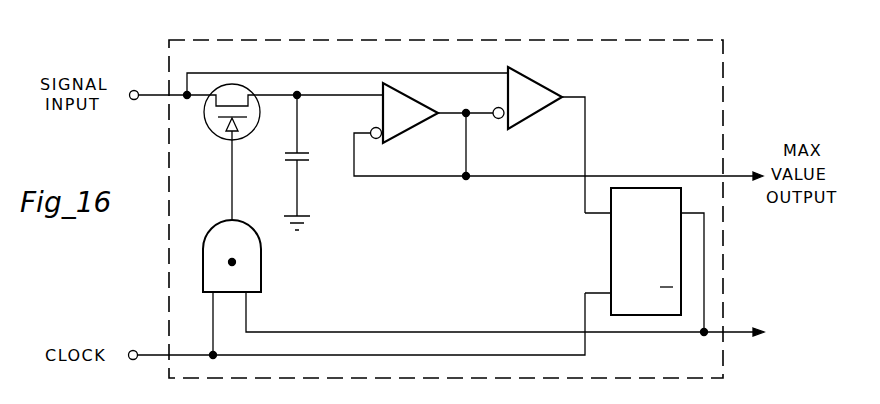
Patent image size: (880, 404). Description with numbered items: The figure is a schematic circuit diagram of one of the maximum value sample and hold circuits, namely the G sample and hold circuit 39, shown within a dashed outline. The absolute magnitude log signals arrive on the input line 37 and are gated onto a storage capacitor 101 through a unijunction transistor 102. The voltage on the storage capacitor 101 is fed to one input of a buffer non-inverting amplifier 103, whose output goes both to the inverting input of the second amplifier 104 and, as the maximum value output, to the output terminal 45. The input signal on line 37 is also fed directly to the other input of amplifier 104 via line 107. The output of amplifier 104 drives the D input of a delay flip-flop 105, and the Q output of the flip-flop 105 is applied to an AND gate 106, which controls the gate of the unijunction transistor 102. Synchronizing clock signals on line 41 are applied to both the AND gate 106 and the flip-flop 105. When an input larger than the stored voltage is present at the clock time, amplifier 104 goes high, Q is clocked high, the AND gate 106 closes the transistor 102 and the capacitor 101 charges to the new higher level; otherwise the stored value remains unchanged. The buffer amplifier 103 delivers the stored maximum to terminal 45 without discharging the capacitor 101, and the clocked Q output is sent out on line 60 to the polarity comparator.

The G sample and hold circuit 39 is at (333, 22).
The output line 37 is at (136, 91).
The line 107 is at (336, 73).
The unijunction transistor 102 is at (212, 136).
The storage capacitor 101 is at (301, 156).
The buffer non-inverting amplifier 103 is at (434, 103).
The amplifier 104 is at (540, 86).
The maximum value output terminal 45 is at (709, 174).
The delay flip-flop 105 is at (611, 262).
The AND gate 106 is at (263, 259).
The line 60 is at (739, 332).
The line 41 is at (133, 348).